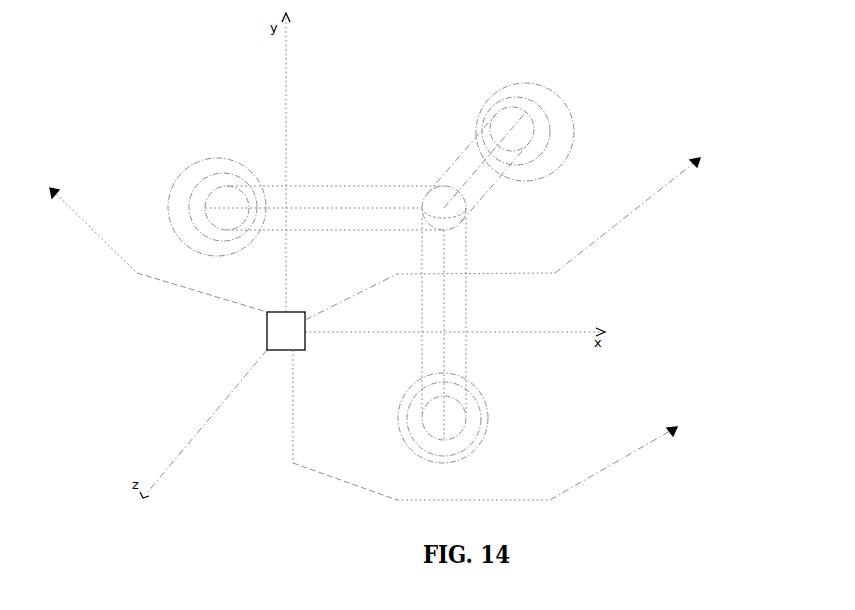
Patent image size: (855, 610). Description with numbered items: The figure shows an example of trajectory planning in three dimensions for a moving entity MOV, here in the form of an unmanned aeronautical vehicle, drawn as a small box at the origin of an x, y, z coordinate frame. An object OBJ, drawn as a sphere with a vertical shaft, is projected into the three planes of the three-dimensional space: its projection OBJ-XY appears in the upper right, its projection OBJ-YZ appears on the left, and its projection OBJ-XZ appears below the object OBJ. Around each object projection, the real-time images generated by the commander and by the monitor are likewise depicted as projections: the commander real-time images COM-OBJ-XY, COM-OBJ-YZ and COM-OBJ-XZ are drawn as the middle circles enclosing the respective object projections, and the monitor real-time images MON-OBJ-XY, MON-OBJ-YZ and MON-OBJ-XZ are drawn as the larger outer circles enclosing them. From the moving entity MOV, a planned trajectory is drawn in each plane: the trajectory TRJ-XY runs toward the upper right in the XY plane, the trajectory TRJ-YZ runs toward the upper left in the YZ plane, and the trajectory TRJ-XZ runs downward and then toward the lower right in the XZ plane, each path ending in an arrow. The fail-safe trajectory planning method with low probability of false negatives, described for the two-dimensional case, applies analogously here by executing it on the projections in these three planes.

The moving entity MOV is at (266, 327).
The object OBJ is at (452, 200).
The trajectory in the XY plane TRJ-XY is at (590, 246).
The trajectory in the YZ plane TRJ-YZ is at (107, 252).
The trajectory in the XZ plane TRJ-XZ is at (625, 456).
The monitor real-time image in the XY plane MON-OBJ-XY is at (549, 93).
The commander real-time image in the XY plane COM-OBJ-XY is at (477, 118).
The object projection in the XY plane OBJ-XY is at (534, 130).
The monitor real-time image in the YZ plane MON-OBJ-YZ is at (166, 195).
The commander real-time image in the YZ plane COM-OBJ-YZ is at (251, 174).
The object projection in the YZ plane OBJ-YZ is at (229, 231).
The monitor real-time image in the XZ plane MON-OBJ-XZ is at (478, 448).
The commander real-time image in the XZ plane COM-OBJ-XZ is at (483, 428).
The object projection in the XZ plane OBJ-XZ is at (467, 421).